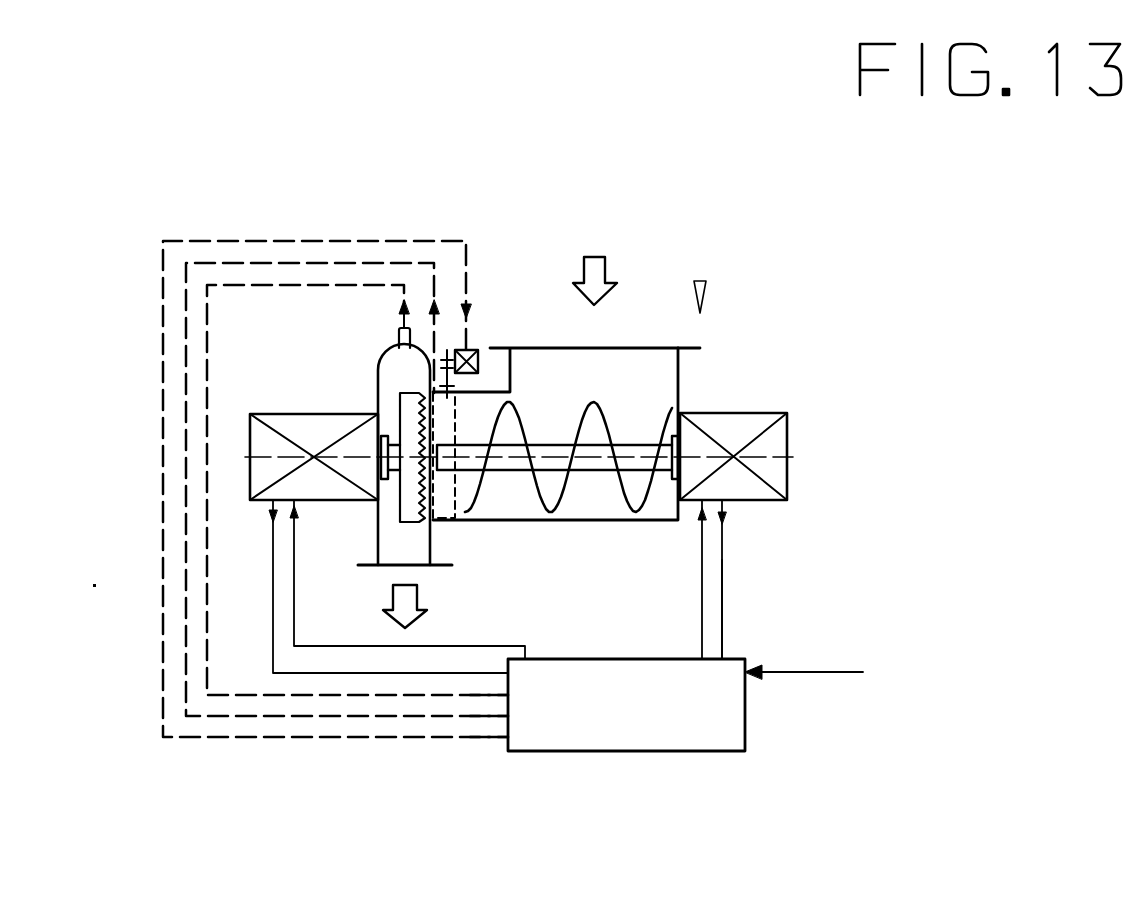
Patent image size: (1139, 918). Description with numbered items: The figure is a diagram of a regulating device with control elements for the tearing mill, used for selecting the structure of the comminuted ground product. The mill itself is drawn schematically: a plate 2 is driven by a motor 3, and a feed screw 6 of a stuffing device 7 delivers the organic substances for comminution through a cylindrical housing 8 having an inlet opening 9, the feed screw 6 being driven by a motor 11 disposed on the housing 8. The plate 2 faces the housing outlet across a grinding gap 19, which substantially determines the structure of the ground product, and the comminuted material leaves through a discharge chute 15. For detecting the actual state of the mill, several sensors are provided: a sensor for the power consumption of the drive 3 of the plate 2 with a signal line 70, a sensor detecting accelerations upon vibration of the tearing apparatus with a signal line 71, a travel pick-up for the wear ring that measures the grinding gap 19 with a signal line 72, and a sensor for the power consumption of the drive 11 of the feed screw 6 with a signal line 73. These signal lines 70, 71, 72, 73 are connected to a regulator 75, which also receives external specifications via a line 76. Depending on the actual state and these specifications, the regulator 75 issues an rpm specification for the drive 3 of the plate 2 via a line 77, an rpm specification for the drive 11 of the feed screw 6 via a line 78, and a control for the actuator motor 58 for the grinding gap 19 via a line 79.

The plate 2 is at (410, 400).
The motor 3 is at (305, 430).
The feed screw 6 is at (538, 520).
The stuffing device 7 is at (700, 281).
The cylindrical housing 8 is at (634, 522).
The inlet opening 9 is at (527, 352).
The motor 11 is at (786, 456).
The discharge chute 15 is at (377, 548).
The grinding gap 19 is at (431, 530).
The actuator motor 58 is at (480, 348).
The signal line 70 is at (273, 537).
The signal line 71 is at (375, 285).
The signal line 72 is at (290, 262).
The signal line 73 is at (799, 579).
The regulator 75 is at (662, 752).
The line 76 is at (810, 673).
The line 77 is at (447, 645).
The line 78 is at (702, 620).
The line 79 is at (198, 240).